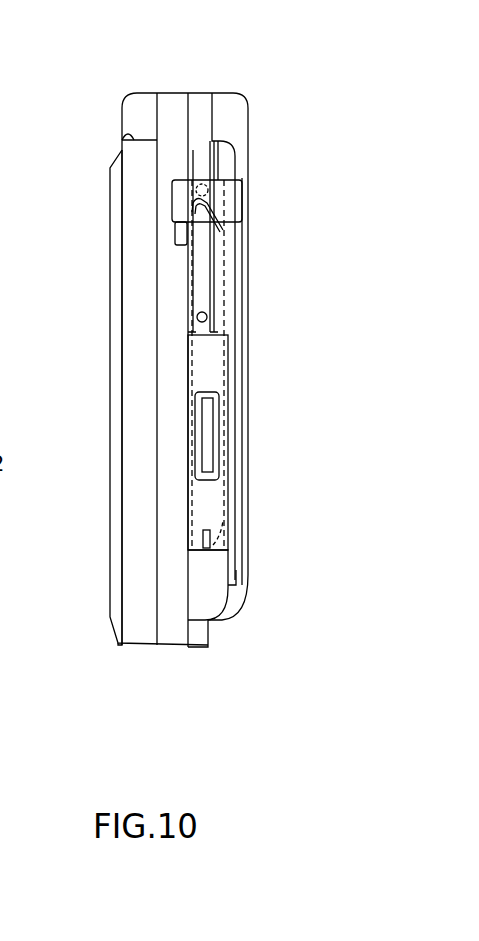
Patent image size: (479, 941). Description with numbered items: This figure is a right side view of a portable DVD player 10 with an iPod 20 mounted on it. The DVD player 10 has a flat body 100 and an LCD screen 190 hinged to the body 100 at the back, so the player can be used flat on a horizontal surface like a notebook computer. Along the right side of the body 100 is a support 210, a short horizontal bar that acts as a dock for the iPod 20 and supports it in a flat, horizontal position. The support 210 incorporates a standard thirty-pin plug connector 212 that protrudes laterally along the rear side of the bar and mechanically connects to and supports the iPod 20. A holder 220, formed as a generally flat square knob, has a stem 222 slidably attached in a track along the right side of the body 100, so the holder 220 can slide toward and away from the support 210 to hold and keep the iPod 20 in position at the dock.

The portable DVD player 10 is at (100, 101).
The body 100 is at (172, 640).
The LCD screen 190 is at (135, 557).
The iPod 20 is at (223, 302).
The holder 220 is at (223, 222).
The stem 222 is at (220, 235).
The 30-pin plug connector 212 is at (207, 530).
The support 210 is at (212, 605).